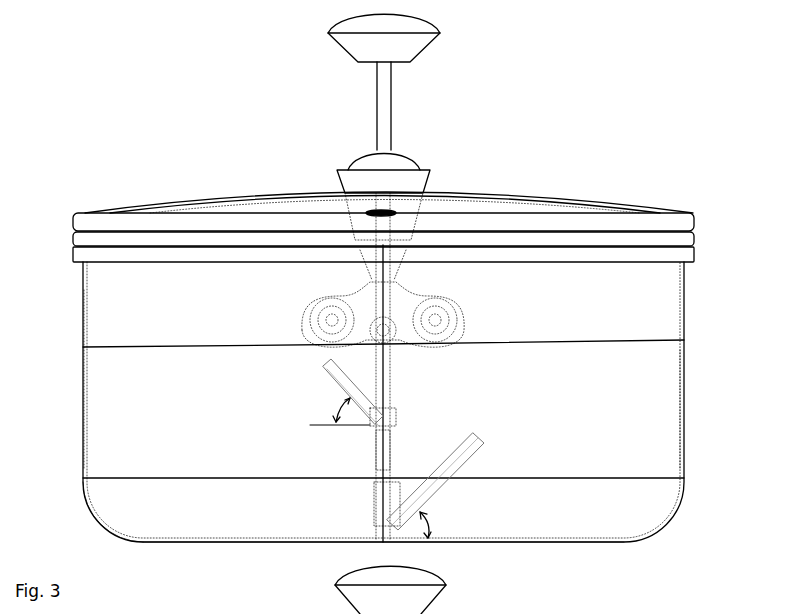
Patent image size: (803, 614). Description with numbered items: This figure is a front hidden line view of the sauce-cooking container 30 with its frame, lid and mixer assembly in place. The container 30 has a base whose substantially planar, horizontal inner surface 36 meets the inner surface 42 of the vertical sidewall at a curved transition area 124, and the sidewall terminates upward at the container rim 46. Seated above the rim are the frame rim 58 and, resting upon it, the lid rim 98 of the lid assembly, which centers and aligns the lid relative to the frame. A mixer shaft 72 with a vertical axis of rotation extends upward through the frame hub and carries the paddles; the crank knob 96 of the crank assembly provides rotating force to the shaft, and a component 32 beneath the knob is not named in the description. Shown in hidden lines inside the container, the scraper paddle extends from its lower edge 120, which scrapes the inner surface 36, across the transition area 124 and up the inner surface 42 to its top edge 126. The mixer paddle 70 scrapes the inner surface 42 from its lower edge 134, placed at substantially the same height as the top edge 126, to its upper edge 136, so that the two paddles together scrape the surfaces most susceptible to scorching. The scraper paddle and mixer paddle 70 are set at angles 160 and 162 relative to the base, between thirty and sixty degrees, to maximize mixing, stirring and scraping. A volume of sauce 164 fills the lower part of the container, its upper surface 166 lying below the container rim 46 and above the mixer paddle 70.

The container 30 is at (685, 498).
The knob base 32 is at (405, 165).
The inner surface 36 is at (590, 538).
The inner surface 42 is at (86, 453).
The container rim 46 is at (693, 258).
The frame rim 58 is at (693, 235).
The mixer paddle 70 is at (350, 385).
The mixer shaft 72 is at (390, 437).
The crank knob 96 is at (433, 27).
The lid rim 98 is at (693, 213).
The lower edge 120 is at (380, 545).
The transition area 124 is at (124, 535).
The top edge 126 is at (482, 438).
The lower edge 134 is at (388, 420).
The upper edge 136 is at (322, 372).
The angle 160 is at (430, 523).
The angle 162 is at (336, 404).
The volume of sauce 164 is at (662, 390).
The upper surface 166 is at (670, 340).